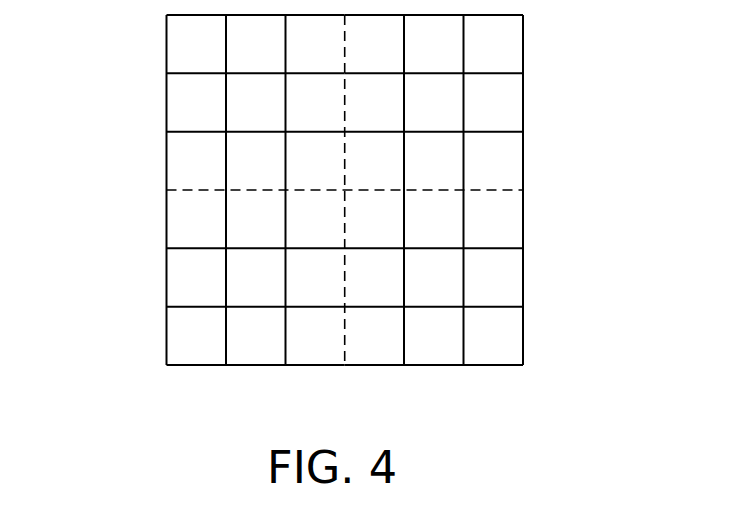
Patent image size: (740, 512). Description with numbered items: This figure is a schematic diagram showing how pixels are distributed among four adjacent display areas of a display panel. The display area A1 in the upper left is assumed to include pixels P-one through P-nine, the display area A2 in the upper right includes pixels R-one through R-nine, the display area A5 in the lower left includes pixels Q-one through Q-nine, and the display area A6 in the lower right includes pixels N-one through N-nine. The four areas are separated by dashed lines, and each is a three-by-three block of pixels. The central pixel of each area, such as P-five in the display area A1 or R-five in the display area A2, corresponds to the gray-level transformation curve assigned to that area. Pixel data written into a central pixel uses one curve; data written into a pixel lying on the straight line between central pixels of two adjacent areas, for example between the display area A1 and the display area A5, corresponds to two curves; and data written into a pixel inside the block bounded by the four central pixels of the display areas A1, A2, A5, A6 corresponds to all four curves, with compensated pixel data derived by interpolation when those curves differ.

The display area A1 is at (150, 104).
The display area A2 is at (540, 107).
The display area A5 is at (150, 279).
The display area A6 is at (540, 282).